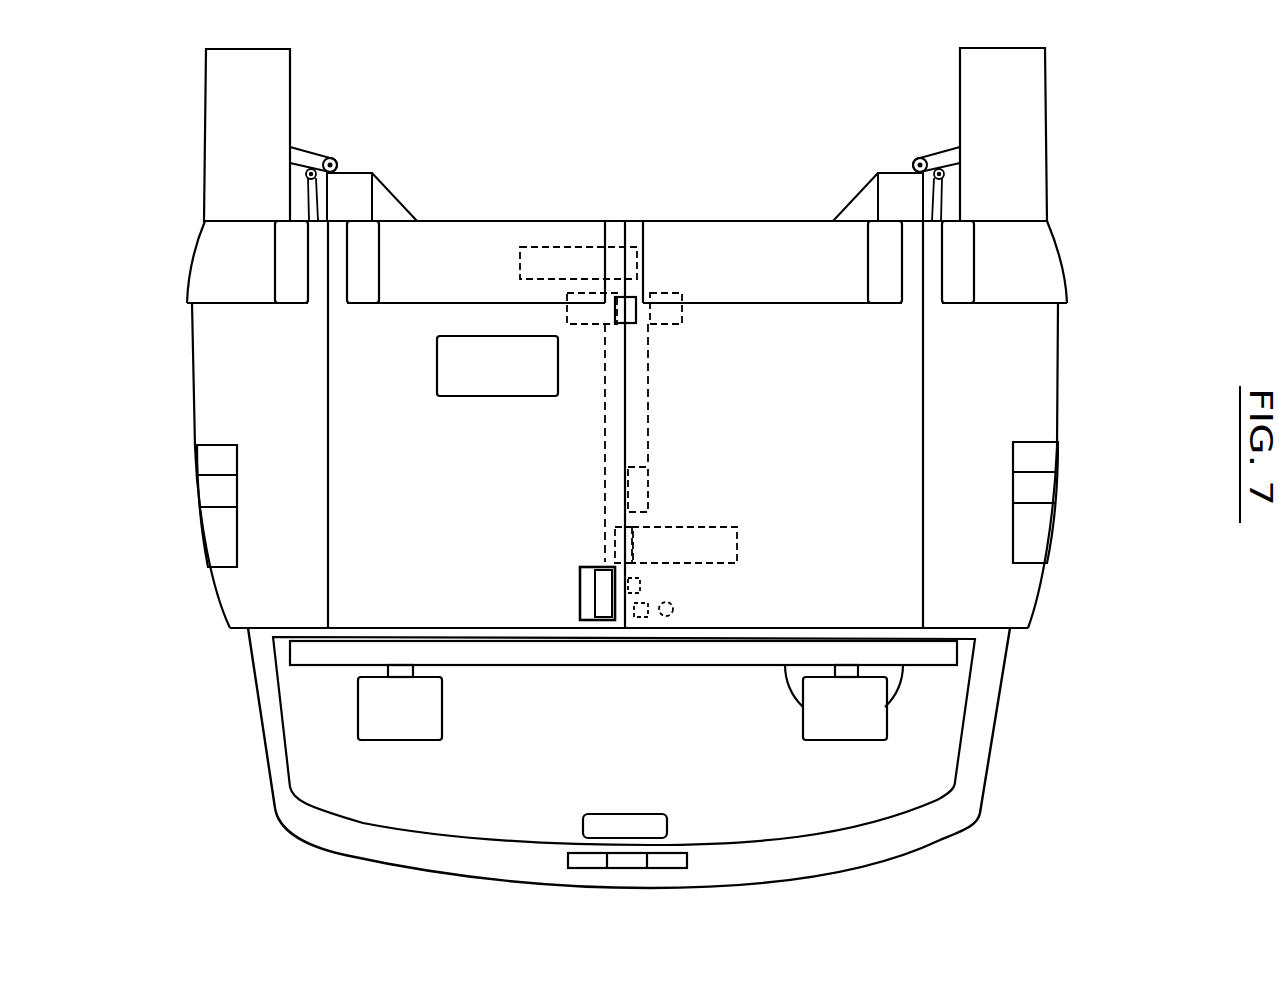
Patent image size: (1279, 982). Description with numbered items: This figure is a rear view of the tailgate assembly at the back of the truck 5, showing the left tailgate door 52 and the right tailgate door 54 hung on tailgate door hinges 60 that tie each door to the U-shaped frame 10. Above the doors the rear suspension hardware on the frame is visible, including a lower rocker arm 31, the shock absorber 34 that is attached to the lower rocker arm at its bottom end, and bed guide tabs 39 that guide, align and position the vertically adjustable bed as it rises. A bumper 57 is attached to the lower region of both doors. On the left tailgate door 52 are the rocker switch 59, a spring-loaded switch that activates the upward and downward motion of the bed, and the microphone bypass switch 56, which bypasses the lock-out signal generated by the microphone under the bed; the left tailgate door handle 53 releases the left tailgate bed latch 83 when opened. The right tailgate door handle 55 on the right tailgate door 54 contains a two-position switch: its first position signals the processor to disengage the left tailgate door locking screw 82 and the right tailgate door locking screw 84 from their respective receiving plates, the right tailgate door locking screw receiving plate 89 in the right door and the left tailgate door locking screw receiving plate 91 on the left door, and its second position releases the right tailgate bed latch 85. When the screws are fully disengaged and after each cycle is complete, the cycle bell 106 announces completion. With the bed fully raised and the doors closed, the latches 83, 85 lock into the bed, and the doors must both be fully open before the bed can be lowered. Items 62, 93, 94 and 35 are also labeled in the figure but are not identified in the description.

The truck 5 is at (357, 857).
The U-shaped frame 10 is at (350, 167).
The lower rocker arm 31 is at (313, 143).
The shock absorber 34 is at (303, 192).
The bed guide tabs 39 is at (377, 165).
The left tailgate door 52 is at (912, 473).
The left tailgate door handle 53 is at (652, 503).
The right tailgate door 54 is at (404, 438).
The right tailgate door handle 55 is at (577, 572).
The microphone bypass switch 56 is at (644, 580).
The bumper 57 is at (580, 218).
The rocker switch 59 is at (638, 630).
The tailgate door hinges 60 is at (332, 587).
The side wall 62 is at (249, 589).
The left tailgate door locking screw 82 is at (740, 548).
The left tailgate bed latch 83 is at (658, 329).
The right tailgate door locking screw 84 is at (518, 272).
The right tailgate bed latch 85 is at (565, 322).
The right tailgate door locking screw receiving plate 89 is at (640, 273).
The left tailgate door locking screw receiving plate 91 is at (612, 553).
The cable 93 is at (652, 433).
The cable 94 is at (600, 447).
The junction block 35 is at (611, 327).
The cycle bell 106 is at (667, 624).